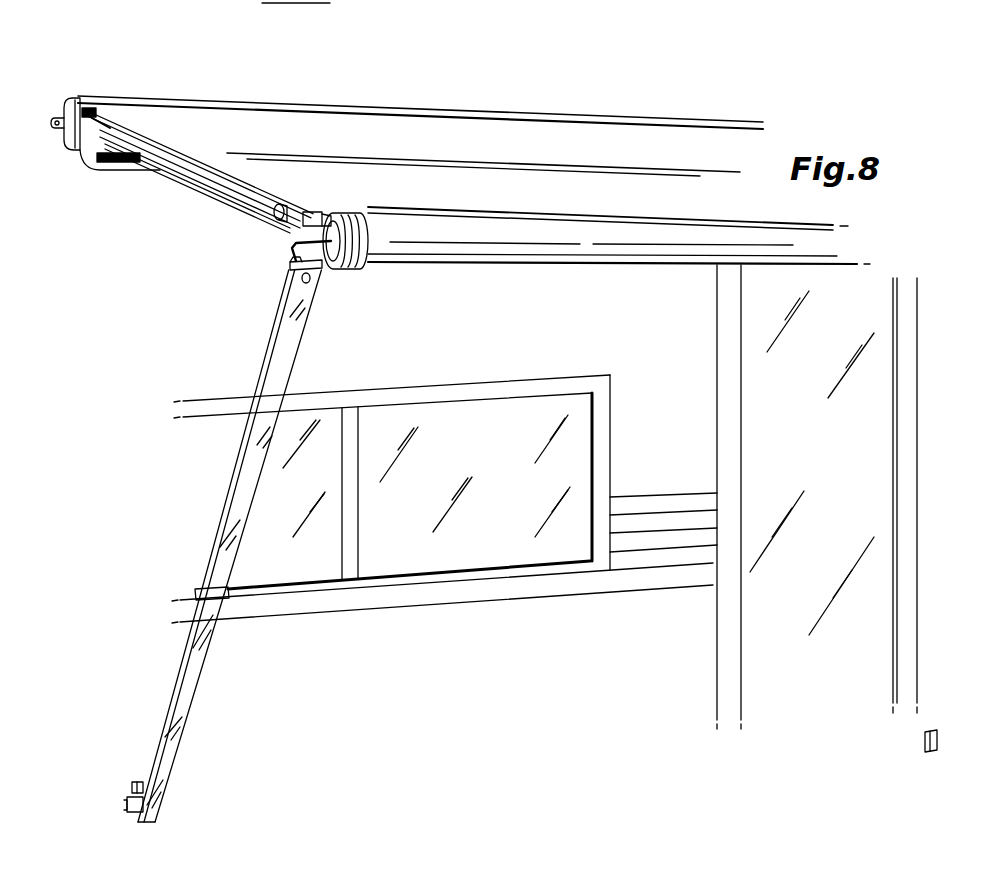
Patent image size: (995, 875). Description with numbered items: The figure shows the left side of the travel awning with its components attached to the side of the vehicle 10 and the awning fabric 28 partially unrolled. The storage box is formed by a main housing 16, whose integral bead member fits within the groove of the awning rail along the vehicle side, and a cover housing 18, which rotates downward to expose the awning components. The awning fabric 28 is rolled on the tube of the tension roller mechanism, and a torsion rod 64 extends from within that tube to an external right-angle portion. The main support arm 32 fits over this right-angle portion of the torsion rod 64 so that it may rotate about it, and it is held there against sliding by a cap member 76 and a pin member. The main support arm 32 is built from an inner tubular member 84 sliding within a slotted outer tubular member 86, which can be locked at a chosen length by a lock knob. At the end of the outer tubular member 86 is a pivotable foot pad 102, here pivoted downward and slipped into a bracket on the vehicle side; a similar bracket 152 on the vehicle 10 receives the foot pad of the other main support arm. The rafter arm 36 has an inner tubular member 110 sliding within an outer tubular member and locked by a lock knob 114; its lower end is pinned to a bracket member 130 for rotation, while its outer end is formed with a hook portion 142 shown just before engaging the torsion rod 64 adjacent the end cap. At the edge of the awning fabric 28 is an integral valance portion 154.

The vehicle 10 is at (170, 369).
The main housing 16 is at (374, 110).
The cover housing 18 is at (115, 168).
The awning fabric 28 is at (507, 200).
The main support arm 32 is at (194, 677).
The rafter arm 36 is at (183, 151).
The torsion rod 64 is at (328, 247).
The cap member 76 is at (302, 281).
The inner tubular member 84 is at (218, 530).
The outer tubular member 86 is at (216, 588).
The foot pad 102 is at (137, 780).
The inner tubular member 110 is at (243, 200).
The lock knob 114 is at (276, 219).
The bracket member 130 is at (88, 106).
The hook portion 142 is at (320, 211).
The bracket 152 is at (126, 806).
The valance portion 154 is at (925, 753).